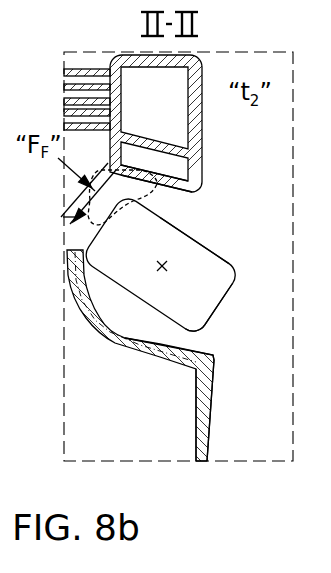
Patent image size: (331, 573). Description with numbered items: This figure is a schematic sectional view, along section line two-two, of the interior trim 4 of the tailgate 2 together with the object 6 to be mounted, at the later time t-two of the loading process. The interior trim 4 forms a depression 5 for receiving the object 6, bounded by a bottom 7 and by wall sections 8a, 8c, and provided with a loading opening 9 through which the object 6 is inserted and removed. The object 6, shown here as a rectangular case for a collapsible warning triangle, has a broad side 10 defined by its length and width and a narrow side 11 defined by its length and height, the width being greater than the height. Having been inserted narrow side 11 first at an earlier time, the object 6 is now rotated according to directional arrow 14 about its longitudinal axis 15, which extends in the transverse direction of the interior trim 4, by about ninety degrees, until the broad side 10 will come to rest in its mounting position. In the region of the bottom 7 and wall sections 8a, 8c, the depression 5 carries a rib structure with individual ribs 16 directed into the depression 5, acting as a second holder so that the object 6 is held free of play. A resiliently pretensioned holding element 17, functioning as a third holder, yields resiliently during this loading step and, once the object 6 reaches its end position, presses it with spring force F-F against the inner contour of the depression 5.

The interior trim 4 is at (165, 125).
The tailgate 2 is at (206, 62).
The wall section 8c is at (157, 183).
The holding element 17 is at (123, 188).
The directional arrow 14 is at (87, 229).
The loading opening 9 is at (185, 245).
The depression 5 is at (190, 209).
The broad side 10 is at (226, 250).
The narrow side 11 is at (236, 301).
The object 6 is at (208, 320).
The longitudinal axis 15 is at (157, 291).
The bottom 7 is at (88, 312).
The individual rib 16 is at (110, 325).
The wall section 8a is at (168, 358).